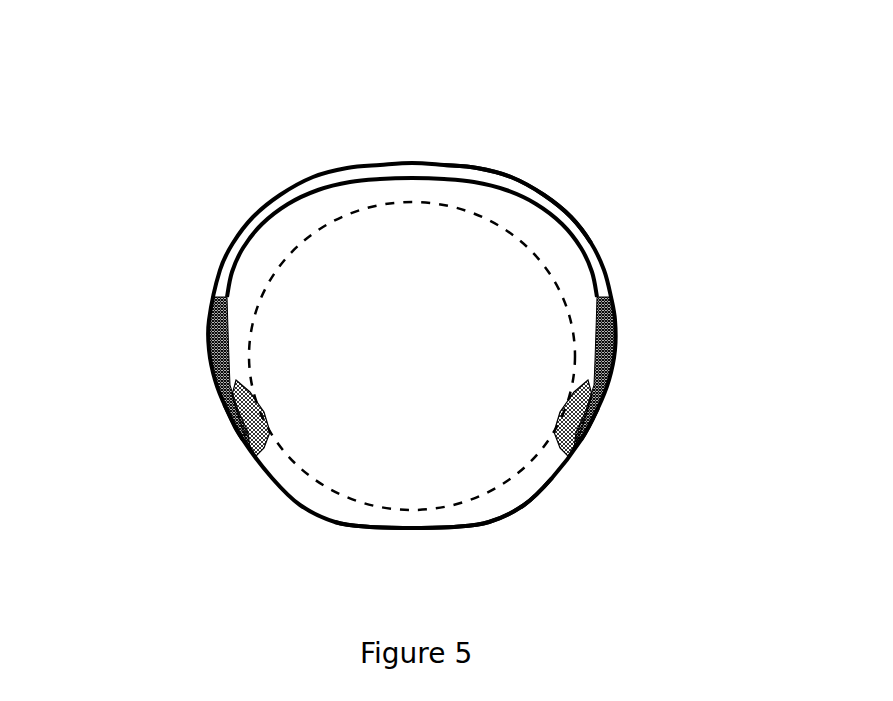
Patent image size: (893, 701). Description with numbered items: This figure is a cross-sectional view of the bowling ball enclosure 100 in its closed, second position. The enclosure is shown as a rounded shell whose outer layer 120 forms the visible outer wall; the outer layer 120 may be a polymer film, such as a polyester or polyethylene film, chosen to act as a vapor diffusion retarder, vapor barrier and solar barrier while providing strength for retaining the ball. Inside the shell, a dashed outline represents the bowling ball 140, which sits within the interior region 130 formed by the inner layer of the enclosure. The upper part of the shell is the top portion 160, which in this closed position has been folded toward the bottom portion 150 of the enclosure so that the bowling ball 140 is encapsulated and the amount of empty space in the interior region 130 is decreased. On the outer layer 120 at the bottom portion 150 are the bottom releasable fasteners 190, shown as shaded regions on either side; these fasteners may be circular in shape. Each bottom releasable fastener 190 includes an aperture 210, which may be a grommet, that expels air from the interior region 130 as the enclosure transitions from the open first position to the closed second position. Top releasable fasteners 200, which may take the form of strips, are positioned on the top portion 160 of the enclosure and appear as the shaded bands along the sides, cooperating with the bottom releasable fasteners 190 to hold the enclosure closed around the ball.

The bowling ball enclosure 100 is at (412, 286).
The outer layer 120 is at (332, 522).
The interior region 130 is at (268, 257).
The bowling ball 140 is at (325, 222).
The bottom portion 150 is at (495, 527).
The top portion 160 is at (485, 171).
The bottom releasable fasteners 190 is at (233, 400).
The top releasable fasteners 200 is at (214, 332).
The aperture 210 is at (238, 425).